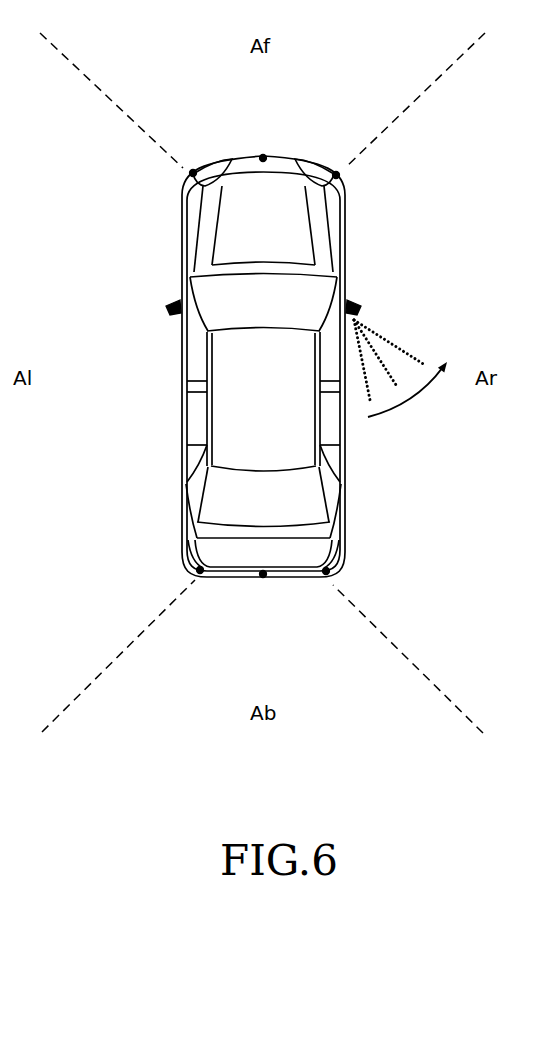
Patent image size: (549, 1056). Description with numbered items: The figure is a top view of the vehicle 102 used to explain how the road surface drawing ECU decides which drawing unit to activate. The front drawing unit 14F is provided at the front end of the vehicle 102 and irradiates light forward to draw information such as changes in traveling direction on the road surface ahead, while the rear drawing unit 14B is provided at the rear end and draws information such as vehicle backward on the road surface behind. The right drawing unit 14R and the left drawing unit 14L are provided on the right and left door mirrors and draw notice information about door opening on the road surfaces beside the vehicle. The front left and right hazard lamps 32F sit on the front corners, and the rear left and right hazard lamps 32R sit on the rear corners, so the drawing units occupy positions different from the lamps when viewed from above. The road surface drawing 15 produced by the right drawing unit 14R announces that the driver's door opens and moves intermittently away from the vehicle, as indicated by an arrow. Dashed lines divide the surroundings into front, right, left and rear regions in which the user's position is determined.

The vehicle 102 is at (342, 456).
The front drawing unit 14F is at (263, 158).
The rear drawing unit 14B is at (263, 575).
The left drawing unit 14L is at (168, 309).
The right drawing unit 14R is at (358, 308).
The front hazard lamps 32F is at (191, 173).
The rear sensors 32R is at (198, 570).
The road surface drawing 15 is at (421, 349).